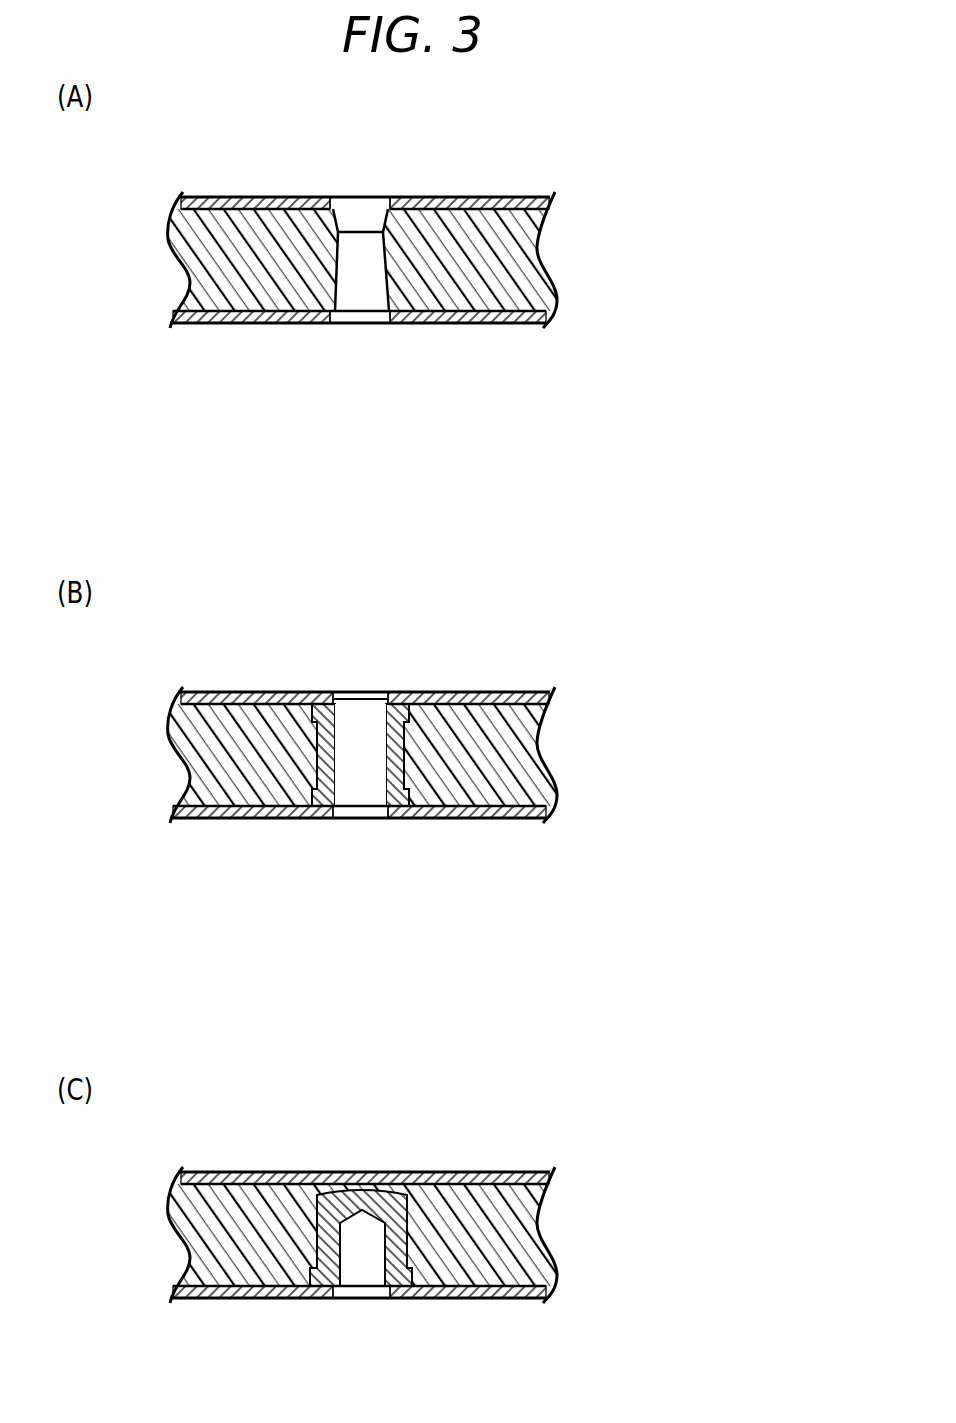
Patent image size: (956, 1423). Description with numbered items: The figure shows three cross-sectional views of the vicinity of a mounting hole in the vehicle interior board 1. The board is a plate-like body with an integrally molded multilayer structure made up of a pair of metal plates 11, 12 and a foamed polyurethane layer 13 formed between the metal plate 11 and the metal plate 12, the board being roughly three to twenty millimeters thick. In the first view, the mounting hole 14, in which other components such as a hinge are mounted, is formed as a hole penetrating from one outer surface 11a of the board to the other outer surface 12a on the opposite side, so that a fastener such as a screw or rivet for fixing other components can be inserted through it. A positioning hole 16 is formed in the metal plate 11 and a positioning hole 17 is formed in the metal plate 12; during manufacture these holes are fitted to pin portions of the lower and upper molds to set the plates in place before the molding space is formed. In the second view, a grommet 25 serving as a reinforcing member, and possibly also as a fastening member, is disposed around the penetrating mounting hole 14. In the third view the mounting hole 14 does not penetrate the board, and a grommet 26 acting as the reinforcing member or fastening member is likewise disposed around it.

The vehicle interior board 1 is at (455, 700).
The metal plate 11 is at (364, 843).
The outer surface 11a is at (358, 854).
The metal plate 12 is at (365, 650).
The outer surface 12a is at (365, 647).
The foamed polyurethane layer 13 is at (405, 747).
The mounting hole 14 is at (378, 786).
The positioning hole 16 is at (360, 837).
The positioning hole 17 is at (360, 408).
The grommet 25 is at (382, 714).
The grommet 26 is at (384, 1184).